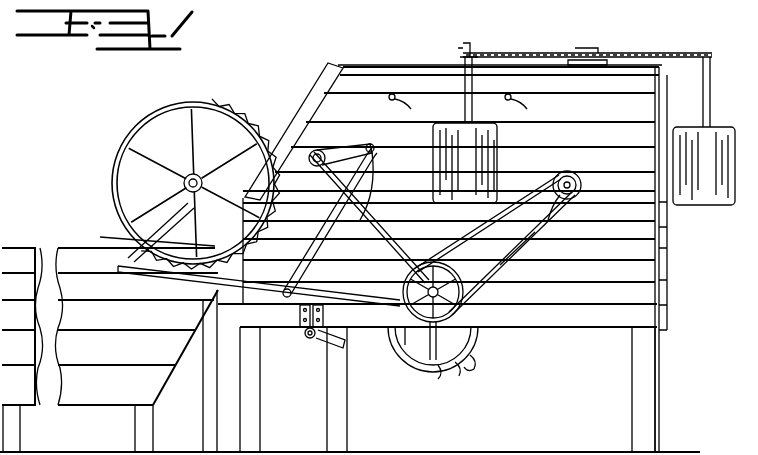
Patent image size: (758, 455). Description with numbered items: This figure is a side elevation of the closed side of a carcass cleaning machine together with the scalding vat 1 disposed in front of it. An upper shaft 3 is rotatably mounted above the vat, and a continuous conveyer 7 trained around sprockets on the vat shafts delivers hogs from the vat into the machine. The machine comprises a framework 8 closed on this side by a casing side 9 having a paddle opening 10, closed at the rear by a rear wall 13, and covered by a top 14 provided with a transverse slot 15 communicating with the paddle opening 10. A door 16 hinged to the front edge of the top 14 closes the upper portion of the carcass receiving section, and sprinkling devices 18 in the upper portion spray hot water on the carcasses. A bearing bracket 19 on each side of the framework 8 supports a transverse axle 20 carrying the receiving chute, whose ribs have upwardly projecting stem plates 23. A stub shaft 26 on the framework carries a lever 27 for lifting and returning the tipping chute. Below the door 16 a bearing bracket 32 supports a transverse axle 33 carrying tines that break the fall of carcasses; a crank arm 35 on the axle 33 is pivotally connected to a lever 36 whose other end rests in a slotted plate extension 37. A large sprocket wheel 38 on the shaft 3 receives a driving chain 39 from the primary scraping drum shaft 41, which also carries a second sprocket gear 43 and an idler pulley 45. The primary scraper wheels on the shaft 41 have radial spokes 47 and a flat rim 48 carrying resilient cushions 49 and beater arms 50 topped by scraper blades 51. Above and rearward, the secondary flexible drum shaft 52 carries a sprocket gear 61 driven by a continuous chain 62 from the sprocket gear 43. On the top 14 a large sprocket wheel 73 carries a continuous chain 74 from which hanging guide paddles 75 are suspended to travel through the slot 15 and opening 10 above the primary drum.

The scalding vat 1 is at (110, 350).
The upper shaft 3 is at (183, 183).
The continuous conveyer 7 is at (151, 232).
The framework 8 is at (640, 383).
The casing side 9 is at (451, 259).
The paddle opening 10 is at (505, 140).
The rear wall 13 is at (662, 258).
The top 14 is at (385, 66).
The transverse slot 15 is at (462, 66).
The door 16 is at (311, 99).
The sprinkling devices 18 is at (464, 105).
The bearing bracket 19 is at (297, 330).
The transverse axle 20 is at (305, 338).
The stem plates 23 is at (340, 360).
The stub shaft 26 is at (300, 290).
The lever 27 is at (150, 273).
The bearing bracket 32 is at (369, 217).
The transverse axle 33 is at (325, 150).
The crank arm 35 is at (376, 146).
The lever 36 is at (305, 250).
The slotted plate extension 37 is at (185, 347).
The large sprocket wheel 38 is at (192, 140).
The driving chain 39 is at (276, 122).
The primary scraping drum shaft 41 is at (408, 282).
The second sprocket gear 43 is at (462, 268).
The idler pulley 45 is at (420, 315).
The radial spokes 47 is at (433, 349).
The flat rim 48 is at (414, 338).
The resilient cushions 49 is at (476, 360).
The beater arms 50 is at (445, 375).
The scraper blades 51 is at (460, 372).
The shaft 52 is at (583, 180).
The sprocket gear 61 is at (548, 225).
The continuous chain 62 is at (530, 250).
The large sprocket wheel 73 is at (590, 47).
The continuous chain 74 is at (625, 52).
The guide paddles 75 is at (432, 178).